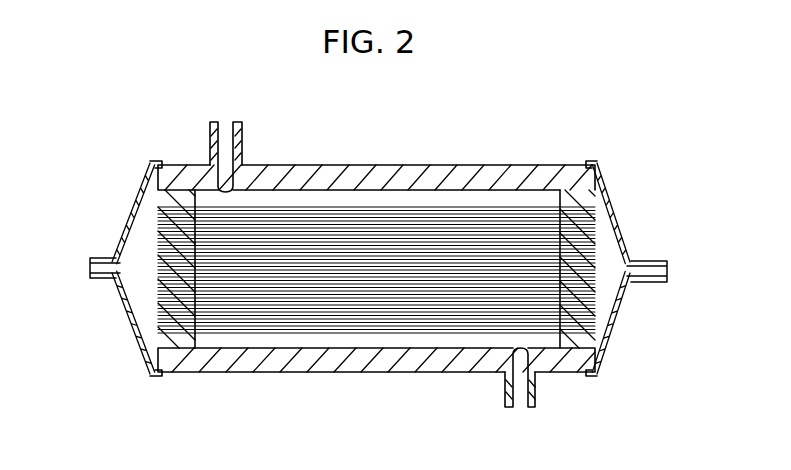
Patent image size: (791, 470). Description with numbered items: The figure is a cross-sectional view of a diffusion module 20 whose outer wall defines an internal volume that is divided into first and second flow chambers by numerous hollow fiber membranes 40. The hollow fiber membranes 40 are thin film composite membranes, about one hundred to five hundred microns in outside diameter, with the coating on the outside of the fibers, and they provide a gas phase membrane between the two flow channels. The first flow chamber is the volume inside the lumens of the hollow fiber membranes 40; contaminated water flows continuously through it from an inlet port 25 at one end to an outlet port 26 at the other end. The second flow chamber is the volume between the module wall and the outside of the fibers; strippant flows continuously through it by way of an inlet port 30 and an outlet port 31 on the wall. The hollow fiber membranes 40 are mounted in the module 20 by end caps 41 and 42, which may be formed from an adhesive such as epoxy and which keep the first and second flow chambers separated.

The module 20 is at (388, 148).
The inlet port 25 is at (657, 262).
The outlet port 26 is at (100, 279).
The inlet port 30 is at (240, 122).
The outlet port 31 is at (537, 405).
The hollow fiber membranes 40 is at (385, 334).
The end cap 41 is at (557, 200).
The end cap 42 is at (197, 343).